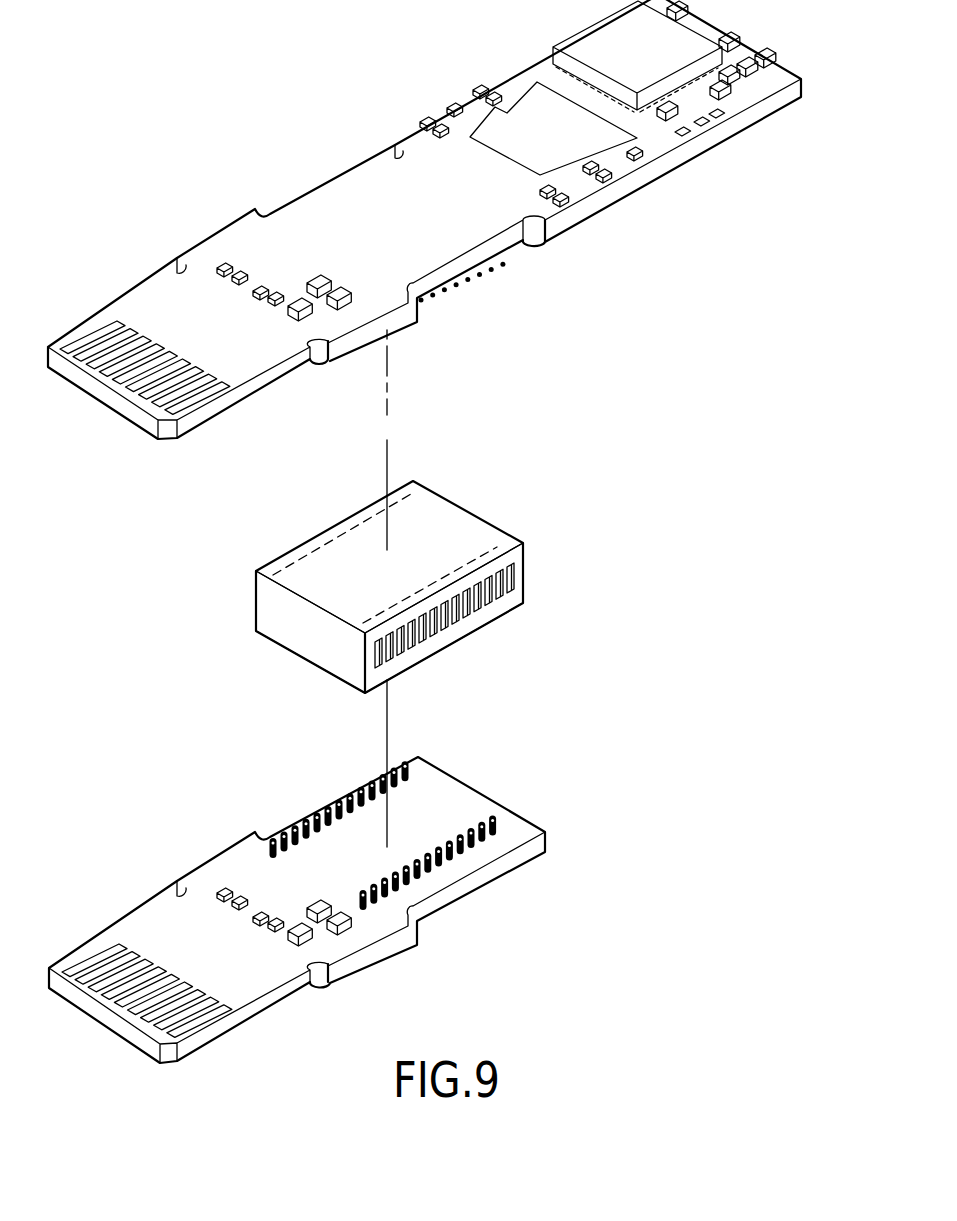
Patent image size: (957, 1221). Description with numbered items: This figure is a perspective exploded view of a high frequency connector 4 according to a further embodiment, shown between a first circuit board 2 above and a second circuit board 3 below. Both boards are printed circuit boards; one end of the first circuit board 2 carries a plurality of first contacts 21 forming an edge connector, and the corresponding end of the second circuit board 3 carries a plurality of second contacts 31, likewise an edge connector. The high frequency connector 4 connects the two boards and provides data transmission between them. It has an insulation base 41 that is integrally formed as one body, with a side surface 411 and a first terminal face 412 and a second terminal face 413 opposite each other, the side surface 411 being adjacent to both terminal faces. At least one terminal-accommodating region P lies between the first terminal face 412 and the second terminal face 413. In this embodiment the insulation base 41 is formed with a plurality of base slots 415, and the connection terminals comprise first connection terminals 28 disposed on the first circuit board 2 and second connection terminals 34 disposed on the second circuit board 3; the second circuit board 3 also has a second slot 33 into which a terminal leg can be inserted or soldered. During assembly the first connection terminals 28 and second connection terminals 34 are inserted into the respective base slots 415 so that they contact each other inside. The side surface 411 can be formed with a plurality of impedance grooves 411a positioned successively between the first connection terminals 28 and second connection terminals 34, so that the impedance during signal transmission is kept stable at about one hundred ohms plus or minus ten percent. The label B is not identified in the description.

The first circuit board 2 is at (424, 233).
The first contacts 21 is at (137, 395).
The first connection terminals 28 is at (503, 266).
The high frequency connector 4 is at (372, 572).
The insulation base 41 is at (486, 537).
The side surface 411 is at (518, 577).
The impedance grooves 411a is at (512, 585).
The first terminal face 412 is at (292, 583).
The second terminal face 413 is at (315, 666).
The base slots 415 is at (335, 540).
The terminal-accommodating region P is at (423, 495).
The top surface of housing B is at (438, 537).
The second circuit board 3 is at (303, 914).
The second contacts 31 is at (120, 990).
The second slot 33 is at (310, 825).
The second connection terminals 34 is at (495, 818).